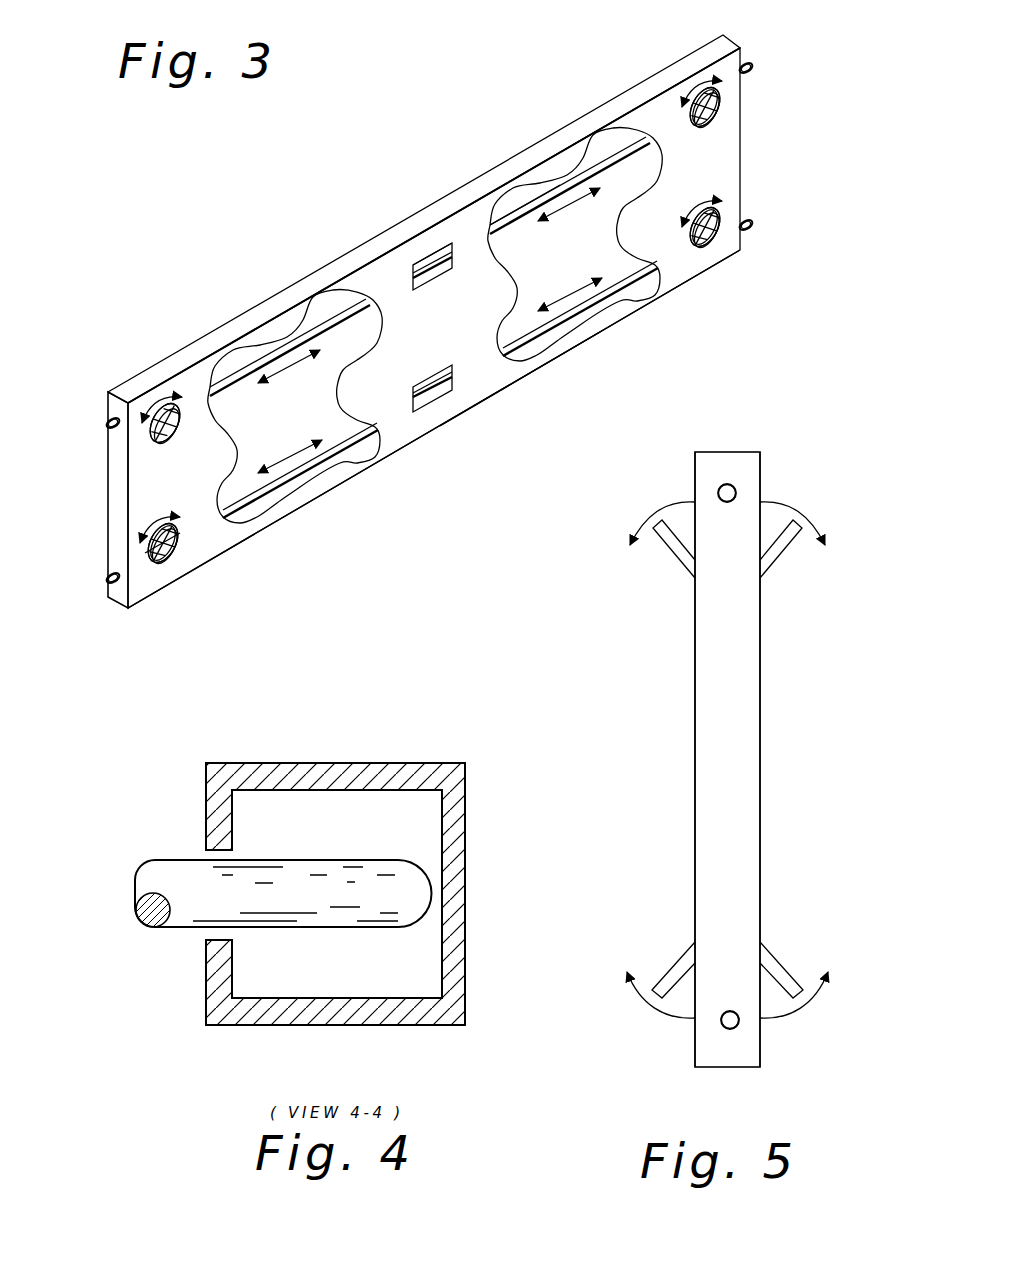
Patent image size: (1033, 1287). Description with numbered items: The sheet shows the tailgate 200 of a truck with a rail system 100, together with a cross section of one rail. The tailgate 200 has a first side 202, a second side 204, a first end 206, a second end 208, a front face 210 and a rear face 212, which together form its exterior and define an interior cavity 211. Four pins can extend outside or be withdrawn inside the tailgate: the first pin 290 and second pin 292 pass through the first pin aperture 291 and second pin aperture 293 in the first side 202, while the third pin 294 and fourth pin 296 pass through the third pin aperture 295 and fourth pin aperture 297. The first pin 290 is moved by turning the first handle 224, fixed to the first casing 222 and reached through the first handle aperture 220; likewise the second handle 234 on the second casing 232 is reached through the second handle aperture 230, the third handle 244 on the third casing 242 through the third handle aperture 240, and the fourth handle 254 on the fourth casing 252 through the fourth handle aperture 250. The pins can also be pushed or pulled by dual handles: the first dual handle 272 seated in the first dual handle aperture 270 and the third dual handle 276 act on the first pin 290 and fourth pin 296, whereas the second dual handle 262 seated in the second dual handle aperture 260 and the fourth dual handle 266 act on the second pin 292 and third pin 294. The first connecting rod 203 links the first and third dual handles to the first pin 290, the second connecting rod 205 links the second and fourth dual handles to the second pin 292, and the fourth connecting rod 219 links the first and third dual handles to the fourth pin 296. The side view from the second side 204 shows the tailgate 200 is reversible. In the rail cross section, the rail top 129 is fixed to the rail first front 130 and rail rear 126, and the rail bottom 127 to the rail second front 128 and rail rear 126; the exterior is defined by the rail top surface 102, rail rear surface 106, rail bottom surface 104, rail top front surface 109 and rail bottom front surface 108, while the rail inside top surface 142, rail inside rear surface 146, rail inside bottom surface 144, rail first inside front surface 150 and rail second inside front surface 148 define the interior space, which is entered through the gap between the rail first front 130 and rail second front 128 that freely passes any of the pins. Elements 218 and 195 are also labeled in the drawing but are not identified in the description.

In FIG. 4, the rail system 100 is at (445, 738).
In FIG. 4, the rail top surface 102 is at (340, 762).
In FIG. 4, the rail bottom surface 104 is at (297, 1025).
In FIG. 4, the rail rear surface 106 is at (467, 950).
In FIG. 4, the rail bottom front surface 108 is at (217, 978).
In FIG. 4, the rail top front surface 109 is at (203, 805).
In FIG. 4, the rail rear 126 is at (453, 887).
In FIG. 4, the rail bottom 127 is at (387, 1013).
In FIG. 4, the rail second front 128 is at (217, 998).
In FIG. 4, the rail top 129 is at (290, 772).
In FIG. 4, the rail first front 130 is at (218, 827).
In FIG. 4, the rail inside top surface 142 is at (333, 797).
In FIG. 4, the rail inside bottom surface 144 is at (338, 998).
In FIG. 4, the rail inside rear surface 146 is at (440, 825).
In FIG. 4, the rail second inside front surface 148 is at (233, 980).
In FIG. 4, the rail first inside front surface 150 is at (233, 810).
In FIG. 5, the lower hole 195 is at (728, 1028).
In FIG. 3, the tailgate 200 is at (346, 220).
In FIG. 5, the tailgate 200 is at (812, 760).
In FIG. 3, the first side 202 is at (742, 152).
In FIG. 3, the first connecting rod 203 is at (517, 212).
In FIG. 3, the second side 204 is at (113, 502).
In FIG. 5, the second side 204 is at (735, 738).
In FIG. 3, the second connecting rod 205 is at (595, 294).
In FIG. 3, the first end 206 is at (648, 296).
In FIG. 3, the second end 208 is at (450, 202).
In FIG. 3, the front face 210 is at (515, 382).
In FIG. 5, the front face 210 is at (760, 845).
In FIG. 3, the interior cavity 211 is at (617, 182).
In FIG. 3, the rear face 212 is at (510, 150).
In FIG. 5, the rear face 212 is at (695, 845).
In FIG. 3, the lower rail 218 is at (375, 428).
In FIG. 3, the fourth connecting rod 219 is at (342, 325).
In FIG. 3, the first handle aperture 220 is at (718, 100).
In FIG. 3, the first casing 222 is at (718, 125).
In FIG. 3, the first handle 224 is at (722, 94).
In FIG. 3, the second handle aperture 230 is at (718, 218).
In FIG. 3, the second casing 232 is at (700, 246).
In FIG. 3, the second handle 234 is at (712, 245).
In FIG. 3, the third handle aperture 240 is at (150, 565).
In FIG. 3, the third casing 242 is at (180, 540).
In FIG. 3, the third handle 244 is at (168, 560).
In FIG. 3, the fourth handle aperture 250 is at (180, 535).
In FIG. 3, the fourth casing 252 is at (187, 413).
In FIG. 3, the fourth handle 254 is at (166, 410).
In FIG. 3, the second dual handle aperture 260 is at (455, 322).
In FIG. 3, the second dual handle 262 is at (432, 400).
In FIG. 5, the second dual handle 262 is at (785, 962).
In FIG. 5, the fourth dual handle 266 is at (675, 960).
In FIG. 3, the first dual handle aperture 270 is at (413, 272).
In FIG. 3, the first dual handle 272 is at (433, 257).
In FIG. 5, the first dual handle 272 is at (783, 558).
In FIG. 5, the third dual handle 276 is at (672, 558).
In FIG. 3, the first pin 290 is at (748, 67).
In FIG. 4, the first pin 290 is at (168, 880).
In FIG. 3, the first pin aperture 291 is at (745, 66).
In FIG. 3, the second pin 292 is at (750, 225).
In FIG. 3, the second pin aperture 293 is at (752, 232).
In FIG. 3, the third pin 294 is at (109, 578).
In FIG. 5, the third pin 294 is at (760, 1030).
In FIG. 3, the third pin aperture 295 is at (118, 580).
In FIG. 3, the fourth pin 296 is at (105, 420).
In FIG. 5, the fourth pin 296 is at (727, 487).
In FIG. 3, the fourth pin aperture 297 is at (117, 420).
In FIG. 5, the fourth pin aperture 297 is at (737, 493).